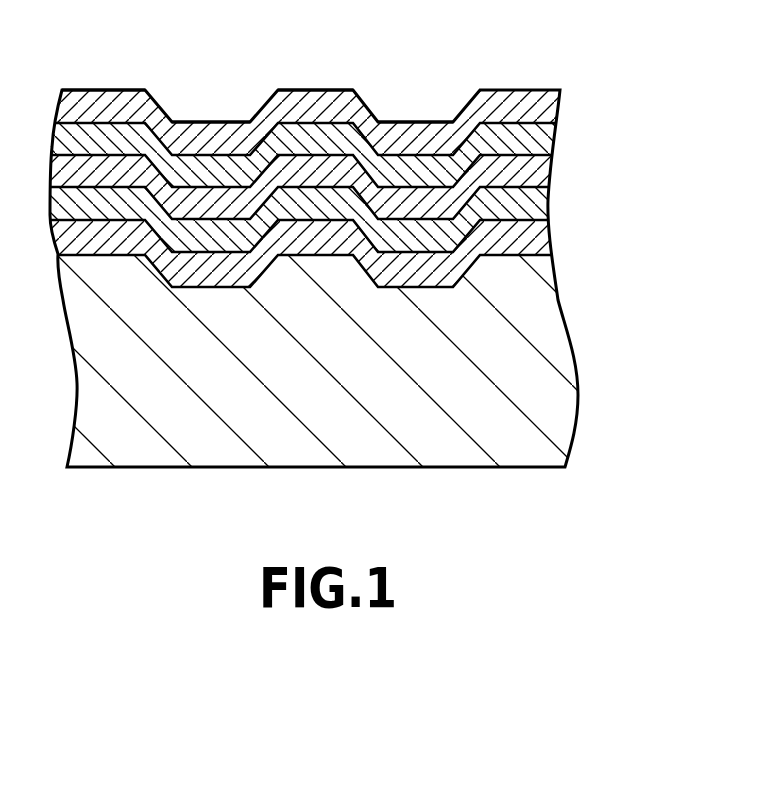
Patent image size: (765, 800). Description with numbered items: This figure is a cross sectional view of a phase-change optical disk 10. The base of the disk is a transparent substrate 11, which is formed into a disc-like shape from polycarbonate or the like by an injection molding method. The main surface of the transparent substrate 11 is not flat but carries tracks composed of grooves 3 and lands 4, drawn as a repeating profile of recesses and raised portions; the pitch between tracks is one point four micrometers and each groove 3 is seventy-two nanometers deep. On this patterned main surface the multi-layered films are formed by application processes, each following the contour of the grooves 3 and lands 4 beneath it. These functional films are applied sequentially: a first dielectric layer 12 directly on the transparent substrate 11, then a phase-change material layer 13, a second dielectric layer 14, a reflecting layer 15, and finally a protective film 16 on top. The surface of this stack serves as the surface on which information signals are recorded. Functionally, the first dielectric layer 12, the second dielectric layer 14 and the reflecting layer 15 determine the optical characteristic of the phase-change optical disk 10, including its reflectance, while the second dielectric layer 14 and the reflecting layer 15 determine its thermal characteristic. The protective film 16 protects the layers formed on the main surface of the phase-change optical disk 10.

The phase-change optical disk 10 is at (540, 70).
The transparent substrate 11 is at (553, 355).
The first dielectric layer 12 is at (540, 239).
The phase-change material layer 13 is at (537, 202).
The second dielectric layer 14 is at (540, 170).
The reflecting layer 15 is at (540, 137).
The protective film 16 is at (560, 106).
The groove 3 is at (213, 122).
The land 4 is at (110, 90).